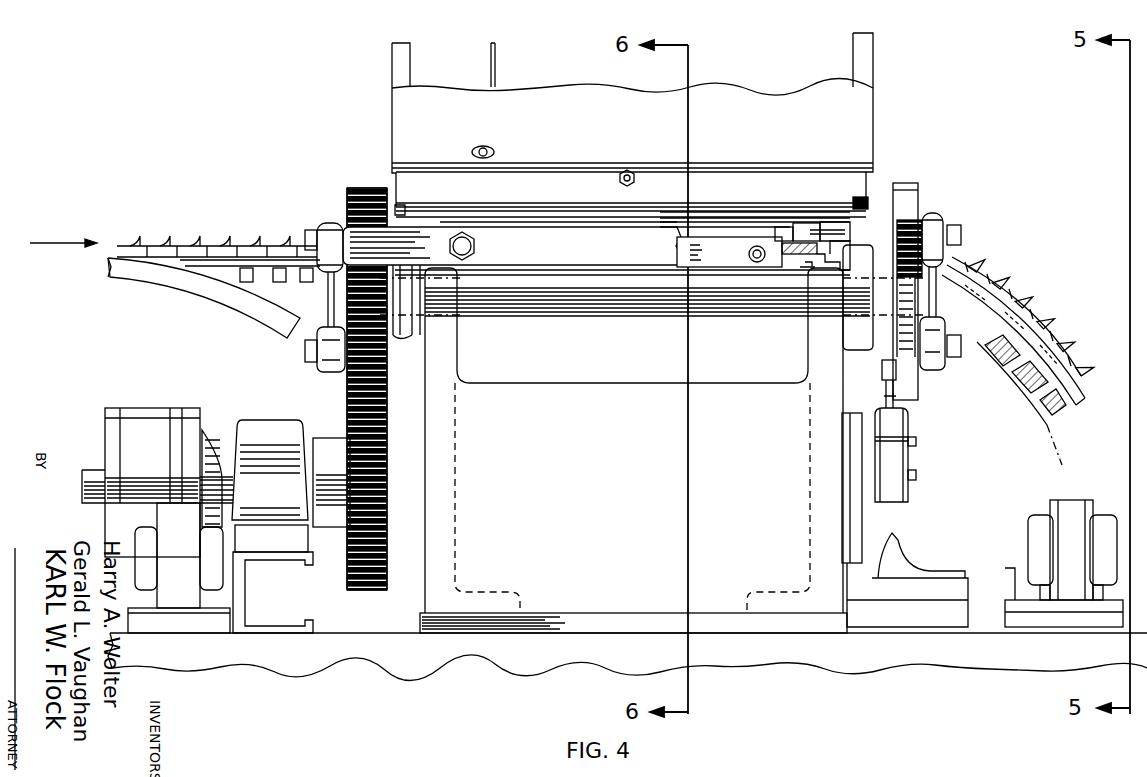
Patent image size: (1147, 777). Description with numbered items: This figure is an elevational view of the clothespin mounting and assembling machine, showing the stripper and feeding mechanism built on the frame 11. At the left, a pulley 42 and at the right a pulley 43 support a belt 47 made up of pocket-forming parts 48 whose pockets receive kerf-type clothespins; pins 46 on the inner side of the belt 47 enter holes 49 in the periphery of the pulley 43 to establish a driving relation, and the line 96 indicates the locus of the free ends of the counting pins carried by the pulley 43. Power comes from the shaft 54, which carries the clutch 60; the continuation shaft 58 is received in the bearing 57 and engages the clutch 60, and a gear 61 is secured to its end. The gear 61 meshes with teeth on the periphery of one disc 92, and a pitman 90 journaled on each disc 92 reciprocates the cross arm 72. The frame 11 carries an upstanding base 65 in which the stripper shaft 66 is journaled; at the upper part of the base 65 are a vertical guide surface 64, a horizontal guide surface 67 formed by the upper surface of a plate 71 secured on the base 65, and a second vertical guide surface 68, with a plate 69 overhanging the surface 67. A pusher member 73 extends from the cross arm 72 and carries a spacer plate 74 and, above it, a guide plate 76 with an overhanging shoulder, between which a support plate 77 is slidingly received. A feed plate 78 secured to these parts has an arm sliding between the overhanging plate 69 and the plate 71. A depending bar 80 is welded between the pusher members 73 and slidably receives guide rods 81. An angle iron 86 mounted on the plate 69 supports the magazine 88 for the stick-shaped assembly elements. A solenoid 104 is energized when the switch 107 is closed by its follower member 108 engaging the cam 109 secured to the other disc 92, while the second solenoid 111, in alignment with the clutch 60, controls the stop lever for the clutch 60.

The frame 11 is at (562, 655).
The pulley 42 is at (190, 272).
The pulley 43 is at (1072, 345).
The pins 46 is at (280, 288).
The belt 47 is at (196, 233).
The pocket-forming parts 48 is at (282, 242).
The holes 49 is at (1010, 354).
The shaft 54 is at (95, 476).
The bearing 57 is at (272, 432).
The continuation shaft 58 is at (233, 466).
The clutch 60 is at (162, 418).
The gear 61 is at (386, 522).
The vertical guide surface 64 is at (812, 262).
The base 65 is at (608, 490).
The stripper shaft 66 is at (613, 300).
The horizontal guide surface 67 is at (838, 240).
The second vertical guide surface 68 is at (847, 232).
The plate 69 is at (814, 232).
The plate 71 is at (827, 243).
The cross arm 72 is at (556, 248).
The pusher member 73 is at (812, 258).
The spacer plate 74 is at (780, 236).
The guide plate 76 is at (800, 236).
The support plate 77 is at (696, 232).
The feed plate 78 is at (724, 234).
The depending bar 80 is at (725, 270).
The guide rods 81 is at (757, 263).
The angle iron 86 is at (528, 196).
The magazine 88 is at (563, 82).
The pitman 90 is at (326, 294).
The disc 92 is at (388, 370).
The line 96 is at (1046, 420).
The solenoid 104 is at (1058, 550).
The switch 107 is at (906, 454).
The follower member 108 is at (884, 393).
The cam 109 is at (882, 368).
The second solenoid 111 is at (165, 557).